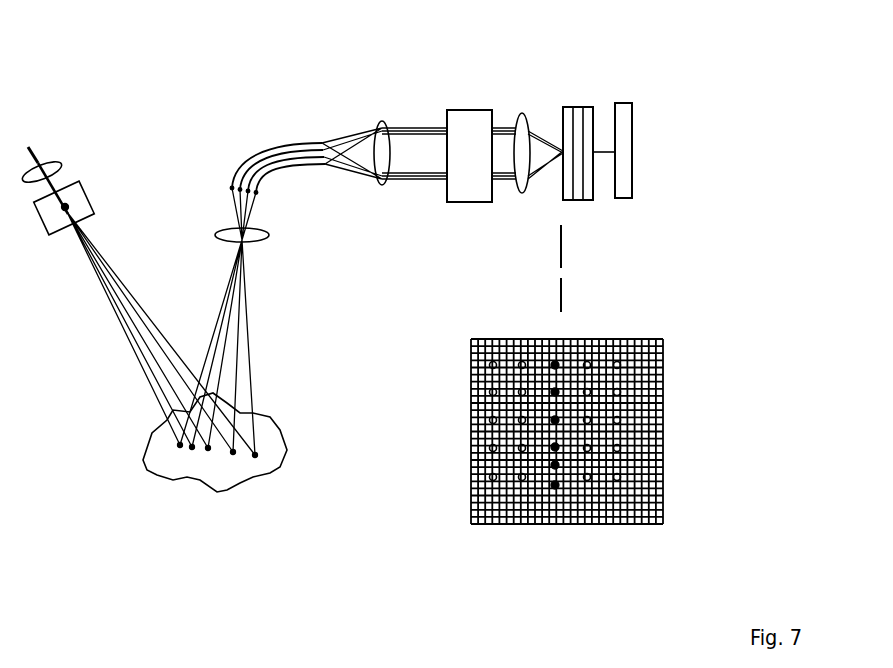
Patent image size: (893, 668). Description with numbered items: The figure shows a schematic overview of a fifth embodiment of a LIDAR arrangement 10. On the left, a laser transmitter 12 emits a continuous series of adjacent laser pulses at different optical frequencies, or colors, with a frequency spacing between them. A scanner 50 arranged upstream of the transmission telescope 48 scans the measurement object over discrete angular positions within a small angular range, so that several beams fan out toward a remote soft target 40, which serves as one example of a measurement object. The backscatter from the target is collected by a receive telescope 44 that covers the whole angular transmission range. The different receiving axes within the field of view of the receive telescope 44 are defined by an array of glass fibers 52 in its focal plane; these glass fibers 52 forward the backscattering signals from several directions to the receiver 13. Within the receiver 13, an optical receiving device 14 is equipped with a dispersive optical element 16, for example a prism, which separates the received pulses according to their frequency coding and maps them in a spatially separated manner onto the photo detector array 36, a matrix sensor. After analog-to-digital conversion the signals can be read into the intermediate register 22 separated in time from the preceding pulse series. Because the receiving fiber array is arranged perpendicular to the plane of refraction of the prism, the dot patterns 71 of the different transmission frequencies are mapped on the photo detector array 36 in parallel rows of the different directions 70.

The LIDAR arrangement 10 is at (386, 441).
The laser transmitter 12 is at (145, 93).
The receiver 13 is at (338, 58).
The optical receiving device 14 is at (418, 70).
The dispersive optical element 16 is at (468, 120).
The intermediate register 22 is at (627, 128).
The photo detector array 36 is at (558, 88).
The remote soft target 40 is at (272, 435).
The receive telescope 44 is at (260, 243).
The transmission telescope 48 is at (48, 162).
The scanner 50 is at (83, 205).
The glass fibers 52 is at (312, 165).
The parallel rows of the different directions 70 is at (650, 343).
The dot patterns 71 is at (475, 427).